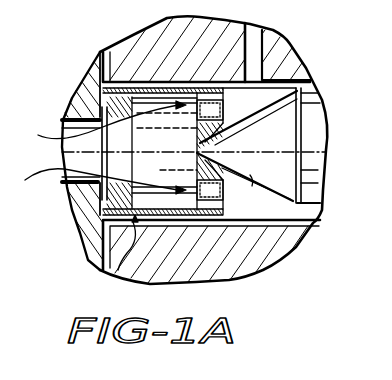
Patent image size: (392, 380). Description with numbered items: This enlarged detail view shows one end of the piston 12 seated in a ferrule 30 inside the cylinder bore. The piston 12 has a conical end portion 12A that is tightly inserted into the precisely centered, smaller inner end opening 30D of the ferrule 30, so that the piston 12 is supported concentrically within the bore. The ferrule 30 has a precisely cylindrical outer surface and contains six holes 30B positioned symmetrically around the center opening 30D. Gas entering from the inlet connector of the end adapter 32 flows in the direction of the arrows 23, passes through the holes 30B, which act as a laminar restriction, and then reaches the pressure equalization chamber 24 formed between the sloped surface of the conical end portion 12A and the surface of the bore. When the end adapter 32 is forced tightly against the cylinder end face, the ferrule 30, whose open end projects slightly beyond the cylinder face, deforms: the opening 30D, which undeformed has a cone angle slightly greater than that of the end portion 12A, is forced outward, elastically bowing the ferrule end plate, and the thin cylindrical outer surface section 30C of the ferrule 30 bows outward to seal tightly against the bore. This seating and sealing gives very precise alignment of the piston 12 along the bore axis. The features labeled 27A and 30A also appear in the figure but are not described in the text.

The piston 12 is at (318, 205).
The conical end portion 12A is at (272, 222).
The arrows 23 is at (38, 135).
The pressure equalization chamber 24 is at (272, 97).
The slot 27A is at (261, 48).
The ferrule 30 is at (107, 268).
The insert lower portion 30A is at (157, 222).
The holes 30B is at (228, 72).
The thin cylindrical outer surface section 30C is at (190, 87).
The inner end opening 30D is at (247, 150).
The end adapter 32 is at (82, 97).